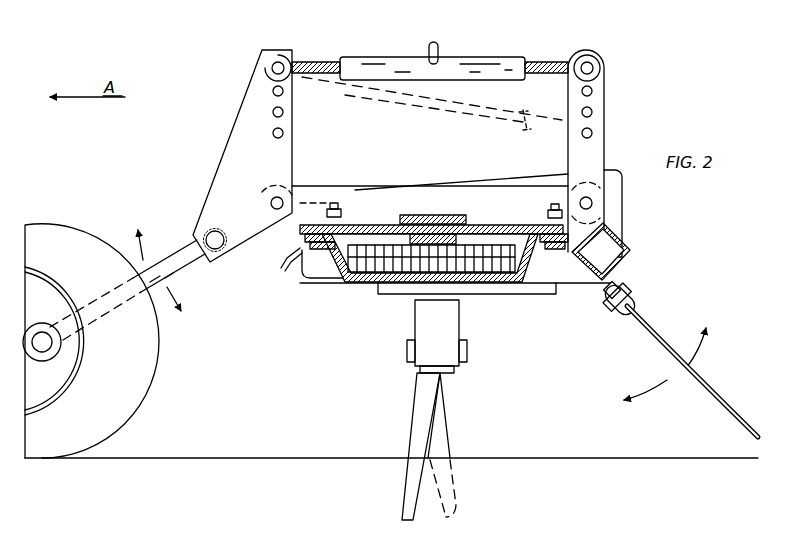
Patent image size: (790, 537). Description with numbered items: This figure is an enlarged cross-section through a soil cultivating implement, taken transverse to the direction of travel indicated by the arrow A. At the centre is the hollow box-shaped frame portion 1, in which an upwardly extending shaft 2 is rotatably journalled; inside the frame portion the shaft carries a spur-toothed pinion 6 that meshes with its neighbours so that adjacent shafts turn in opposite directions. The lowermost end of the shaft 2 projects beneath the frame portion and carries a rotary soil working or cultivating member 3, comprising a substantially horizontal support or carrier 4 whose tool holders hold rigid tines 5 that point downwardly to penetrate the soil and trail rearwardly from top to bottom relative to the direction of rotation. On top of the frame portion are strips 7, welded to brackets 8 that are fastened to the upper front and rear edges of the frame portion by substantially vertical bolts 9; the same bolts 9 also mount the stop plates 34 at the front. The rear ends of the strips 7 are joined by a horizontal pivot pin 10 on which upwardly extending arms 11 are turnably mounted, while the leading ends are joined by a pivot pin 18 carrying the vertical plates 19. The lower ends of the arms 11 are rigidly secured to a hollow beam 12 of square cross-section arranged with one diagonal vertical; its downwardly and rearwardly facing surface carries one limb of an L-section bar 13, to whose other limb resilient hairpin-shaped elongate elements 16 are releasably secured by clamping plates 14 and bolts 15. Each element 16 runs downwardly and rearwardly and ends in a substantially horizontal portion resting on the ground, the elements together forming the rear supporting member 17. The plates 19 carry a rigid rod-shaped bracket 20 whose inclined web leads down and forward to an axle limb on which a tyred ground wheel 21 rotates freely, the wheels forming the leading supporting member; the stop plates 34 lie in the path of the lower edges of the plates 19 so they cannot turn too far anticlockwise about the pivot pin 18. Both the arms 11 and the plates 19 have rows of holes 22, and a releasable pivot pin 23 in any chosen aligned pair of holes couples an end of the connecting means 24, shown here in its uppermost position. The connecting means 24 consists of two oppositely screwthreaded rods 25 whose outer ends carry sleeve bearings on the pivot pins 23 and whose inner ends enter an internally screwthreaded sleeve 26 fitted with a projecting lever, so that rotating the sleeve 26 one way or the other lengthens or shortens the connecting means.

The hollow box-shaped frame portion 1 is at (340, 278).
The shafts 2 is at (436, 248).
The rotary soil working or cultivating member 3 is at (412, 401).
The support or carrier 4 is at (440, 348).
The tines 5 is at (428, 443).
The pinion 6 is at (503, 277).
The strips 7 is at (508, 182).
The brackets 8 is at (338, 228).
The bolts 9 is at (332, 208).
The horizontal pivot pin 10 is at (593, 203).
The upwardly extending arms 11 is at (570, 139).
The beam 12 is at (630, 256).
The bar of L-shaped cross-section 13 is at (628, 284).
The clamping plates 14 is at (606, 292).
The bolts 15 is at (612, 310).
The elongate elements 16 is at (657, 362).
The rear supporting member 17 is at (716, 412).
The pivot pin 18 is at (270, 205).
The plates 19 is at (217, 161).
The rigid rod-shaped bracket 20 is at (138, 285).
The ground wheel 21 is at (130, 413).
The holes 22 is at (283, 113).
The releasable pivot pin 23 is at (271, 69).
The connecting means 24 is at (426, 56).
The screwthreaded rods 25 is at (335, 81).
The internally screwthreaded sleeve 26 is at (400, 88).
The stop plates 34 is at (280, 268).